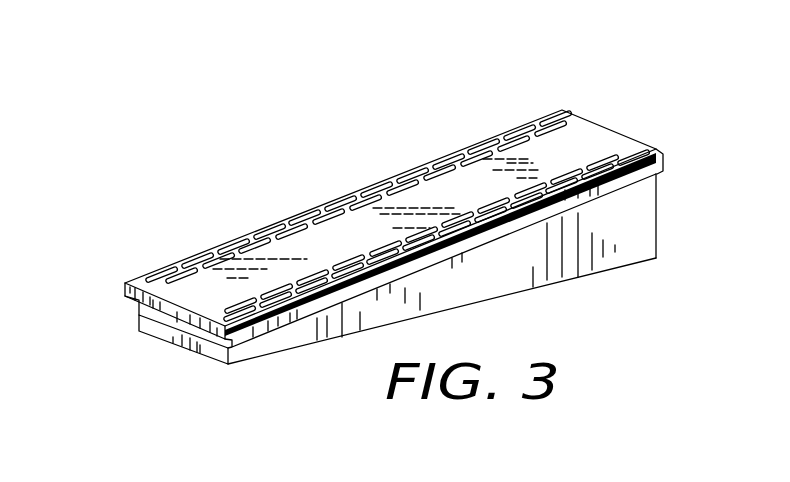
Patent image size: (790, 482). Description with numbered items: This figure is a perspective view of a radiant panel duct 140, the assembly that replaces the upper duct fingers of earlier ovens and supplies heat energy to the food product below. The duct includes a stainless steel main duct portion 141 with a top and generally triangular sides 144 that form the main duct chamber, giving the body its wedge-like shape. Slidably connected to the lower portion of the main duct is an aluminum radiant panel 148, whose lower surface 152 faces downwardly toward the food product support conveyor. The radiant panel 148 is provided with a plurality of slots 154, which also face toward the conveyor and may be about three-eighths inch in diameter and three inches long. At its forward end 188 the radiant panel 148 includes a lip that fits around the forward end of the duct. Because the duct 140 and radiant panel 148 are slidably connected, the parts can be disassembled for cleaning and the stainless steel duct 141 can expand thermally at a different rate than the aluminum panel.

The radiant panel duct 140 is at (582, 95).
The lower surface 152 is at (587, 140).
The radiant panel 148 is at (653, 148).
The slots 154 is at (432, 178).
The forward end 188 is at (125, 296).
The sides 144 is at (630, 218).
The main duct portion 141 is at (655, 260).